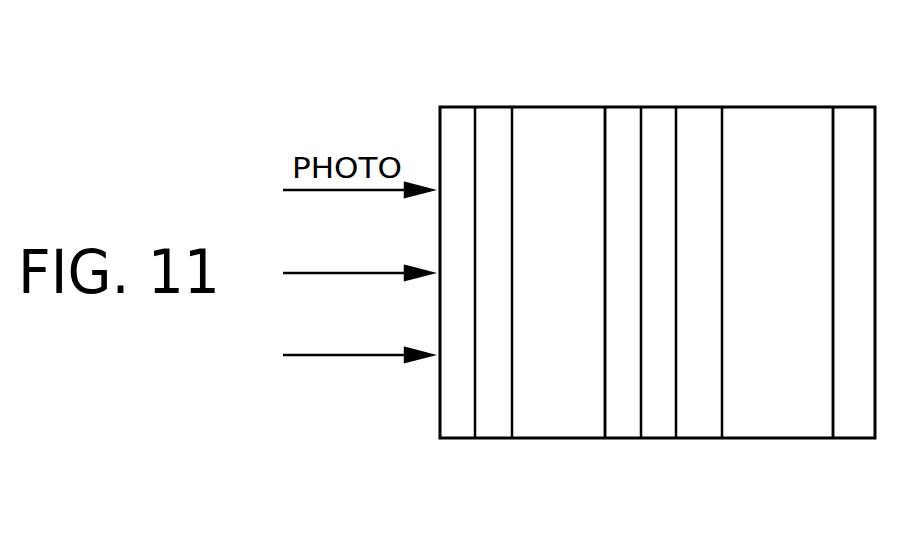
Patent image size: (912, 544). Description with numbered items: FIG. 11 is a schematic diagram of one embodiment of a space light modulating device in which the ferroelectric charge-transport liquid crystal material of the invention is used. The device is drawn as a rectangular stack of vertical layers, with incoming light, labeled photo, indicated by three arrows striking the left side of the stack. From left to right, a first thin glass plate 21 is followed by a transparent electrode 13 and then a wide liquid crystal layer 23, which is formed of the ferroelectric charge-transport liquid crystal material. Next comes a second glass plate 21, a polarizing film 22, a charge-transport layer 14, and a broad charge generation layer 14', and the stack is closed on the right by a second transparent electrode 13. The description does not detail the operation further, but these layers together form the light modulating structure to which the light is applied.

The transparent electrode 13 is at (492, 422).
The charge-transport layer 14 is at (701, 315).
The charge generation layer 14' is at (808, 241).
The glass plate 21 is at (455, 140).
The polarizing film 22 is at (659, 140).
The liquid crystal layer 23 is at (560, 422).